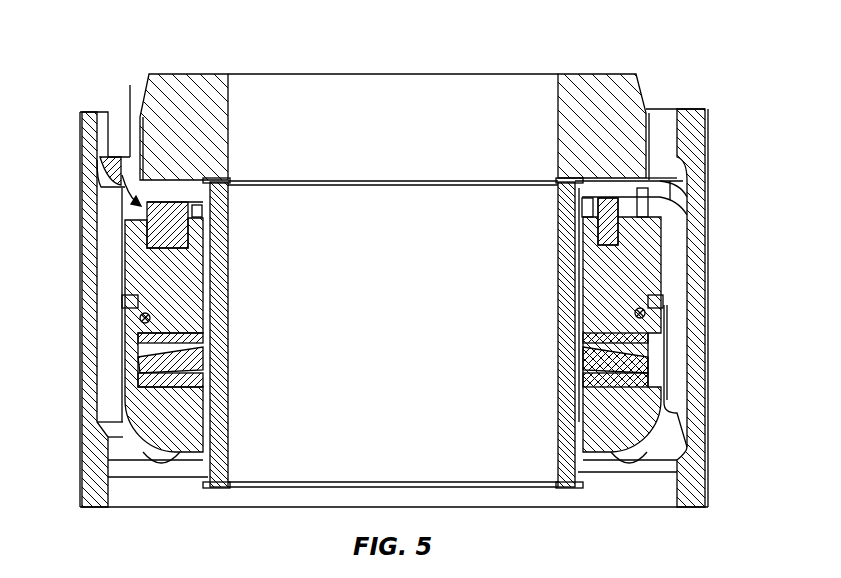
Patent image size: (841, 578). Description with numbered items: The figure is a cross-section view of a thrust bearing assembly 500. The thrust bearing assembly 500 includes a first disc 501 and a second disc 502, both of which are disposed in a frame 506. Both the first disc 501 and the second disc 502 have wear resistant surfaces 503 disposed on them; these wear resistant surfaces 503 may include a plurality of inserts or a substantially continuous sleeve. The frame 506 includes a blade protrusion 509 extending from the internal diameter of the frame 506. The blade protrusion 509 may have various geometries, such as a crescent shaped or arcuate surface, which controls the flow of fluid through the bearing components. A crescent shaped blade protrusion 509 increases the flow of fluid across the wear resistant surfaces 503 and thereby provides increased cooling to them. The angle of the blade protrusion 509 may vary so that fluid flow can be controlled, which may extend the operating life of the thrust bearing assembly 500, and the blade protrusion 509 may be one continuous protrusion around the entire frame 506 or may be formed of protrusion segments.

The thrust bearing assembly 500 is at (572, 46).
The first disc 501 is at (618, 130).
The second disc 502 is at (648, 268).
The wear resistant surfaces 503 is at (635, 188).
The frame 506 is at (90, 230).
The blade protrusion 509 is at (110, 173).